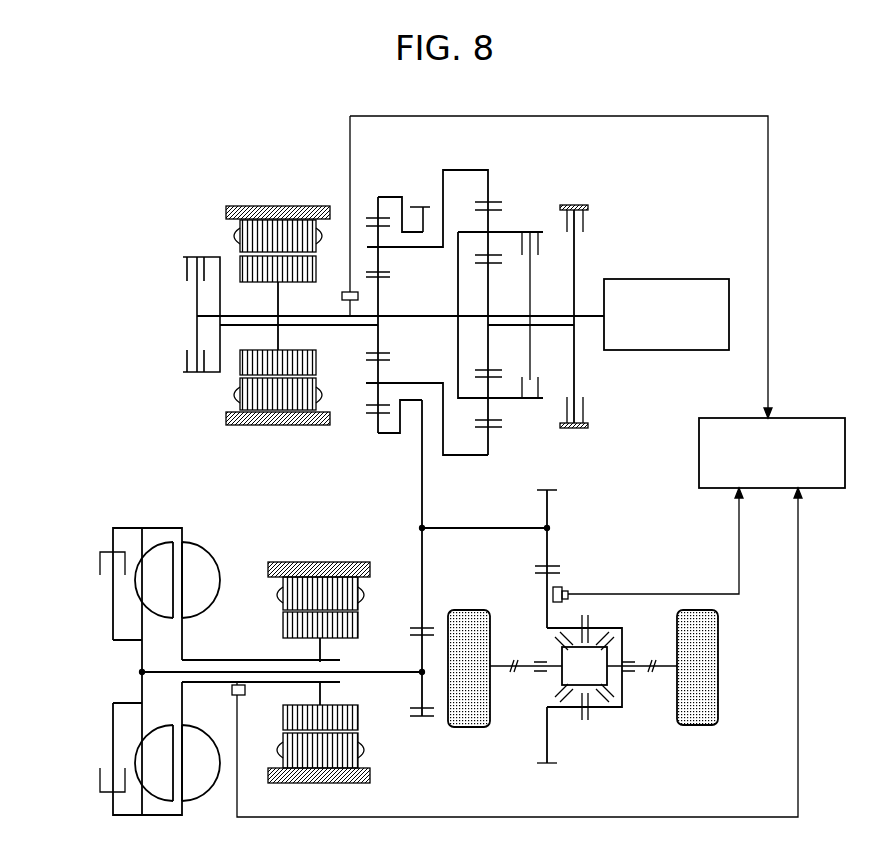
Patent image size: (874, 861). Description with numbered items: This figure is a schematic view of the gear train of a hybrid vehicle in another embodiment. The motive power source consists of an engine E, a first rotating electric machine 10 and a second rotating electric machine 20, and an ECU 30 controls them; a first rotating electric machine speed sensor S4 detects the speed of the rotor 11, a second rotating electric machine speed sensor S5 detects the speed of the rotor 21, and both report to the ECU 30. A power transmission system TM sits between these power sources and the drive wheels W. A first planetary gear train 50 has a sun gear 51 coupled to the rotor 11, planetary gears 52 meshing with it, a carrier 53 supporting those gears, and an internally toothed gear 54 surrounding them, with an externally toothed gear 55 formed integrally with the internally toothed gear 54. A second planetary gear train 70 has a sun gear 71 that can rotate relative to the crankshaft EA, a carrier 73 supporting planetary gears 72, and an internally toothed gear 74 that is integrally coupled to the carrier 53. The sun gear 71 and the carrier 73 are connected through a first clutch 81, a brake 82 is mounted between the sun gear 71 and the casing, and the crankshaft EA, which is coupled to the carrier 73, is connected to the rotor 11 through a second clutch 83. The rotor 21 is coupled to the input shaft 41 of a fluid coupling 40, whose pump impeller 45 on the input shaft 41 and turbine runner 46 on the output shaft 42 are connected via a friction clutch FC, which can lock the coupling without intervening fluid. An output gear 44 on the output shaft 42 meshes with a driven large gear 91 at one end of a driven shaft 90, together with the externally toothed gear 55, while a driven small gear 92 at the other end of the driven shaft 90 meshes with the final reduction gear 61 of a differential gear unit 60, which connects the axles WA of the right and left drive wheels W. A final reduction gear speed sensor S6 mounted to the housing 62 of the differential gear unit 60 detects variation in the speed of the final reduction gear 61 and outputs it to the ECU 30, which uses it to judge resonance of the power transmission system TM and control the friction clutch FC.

The first rotating electric machine 10 is at (203, 215).
The rotor 11 is at (240, 370).
The second clutch 83 is at (190, 262).
The first rotating electric machine speed sensor S4 is at (350, 301).
The first planetary gear train 50 is at (390, 192).
The internally toothed gear 54 is at (366, 216).
The externally toothed gear 55 is at (427, 207).
The carrier 53 is at (433, 248).
The sun gear 51 is at (382, 350).
The planetary gears 52 is at (366, 410).
The carrier 73 is at (457, 362).
The second planetary gear train 70 is at (513, 180).
The first clutch 81 is at (525, 232).
The brake 82 is at (582, 215).
The internally toothed gear 74 is at (478, 202).
The sun gear 71 is at (497, 265).
The planetary gears 72 is at (497, 424).
The engine E is at (668, 278).
The crankshaft EA is at (603, 300).
The ECU 30 is at (797, 415).
The driven shaft 90 is at (487, 526).
The driven large gear 91 is at (428, 625).
The output gear 44 is at (428, 710).
The driven small gear 92 is at (550, 488).
The final reduction gear 61 is at (553, 763).
The final reduction gear speed sensor S6 is at (568, 592).
The differential gear unit 60 is at (622, 733).
The housing 62 is at (612, 628).
The axles WA is at (658, 705).
The drive wheels W is at (485, 608).
The power transmission system TM is at (103, 457).
The fluid coupling 40 is at (225, 507).
The input shaft 41 is at (213, 657).
The turbine runner 46 is at (162, 606).
The pump impeller 45 is at (198, 752).
The friction clutch FC is at (108, 790).
The second rotating electric machine speed sensor S5 is at (240, 683).
The output shaft 42 is at (397, 674).
The second rotating electric machine 20 is at (395, 742).
The rotor 21 is at (358, 630).